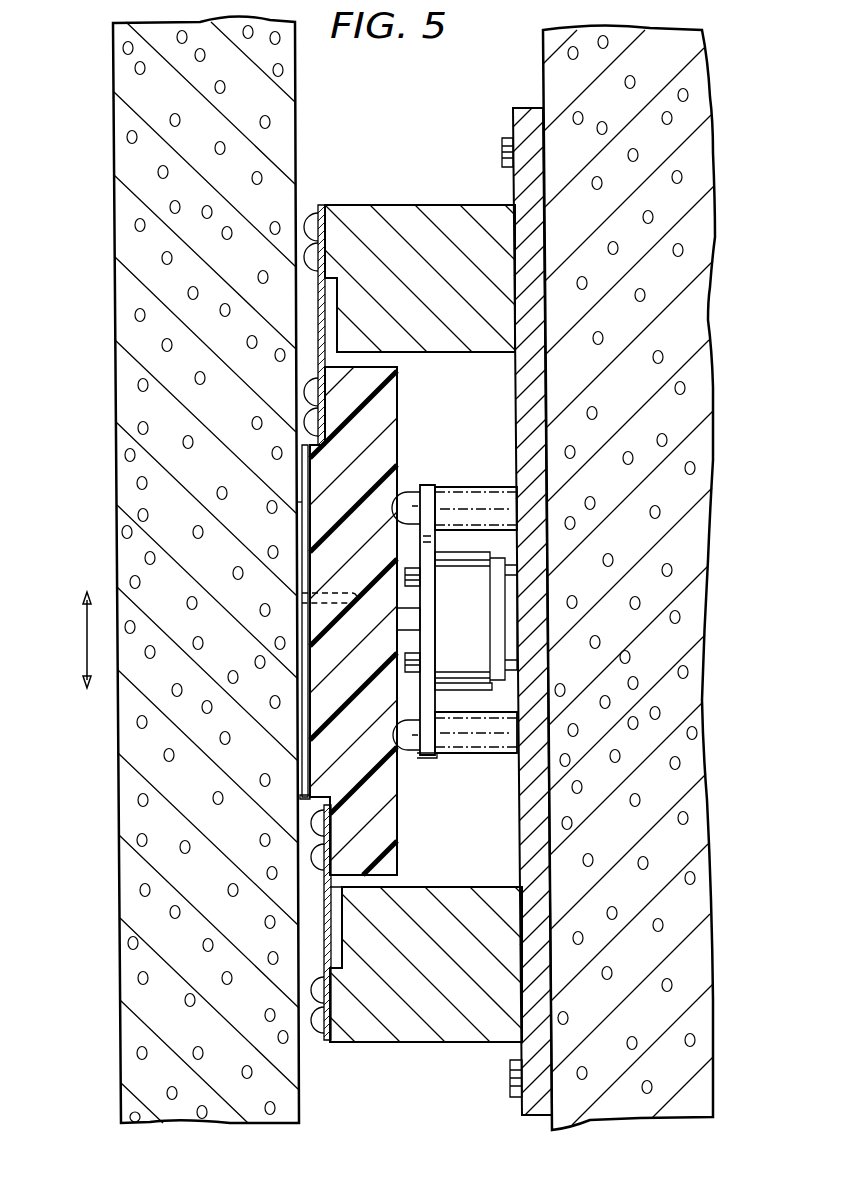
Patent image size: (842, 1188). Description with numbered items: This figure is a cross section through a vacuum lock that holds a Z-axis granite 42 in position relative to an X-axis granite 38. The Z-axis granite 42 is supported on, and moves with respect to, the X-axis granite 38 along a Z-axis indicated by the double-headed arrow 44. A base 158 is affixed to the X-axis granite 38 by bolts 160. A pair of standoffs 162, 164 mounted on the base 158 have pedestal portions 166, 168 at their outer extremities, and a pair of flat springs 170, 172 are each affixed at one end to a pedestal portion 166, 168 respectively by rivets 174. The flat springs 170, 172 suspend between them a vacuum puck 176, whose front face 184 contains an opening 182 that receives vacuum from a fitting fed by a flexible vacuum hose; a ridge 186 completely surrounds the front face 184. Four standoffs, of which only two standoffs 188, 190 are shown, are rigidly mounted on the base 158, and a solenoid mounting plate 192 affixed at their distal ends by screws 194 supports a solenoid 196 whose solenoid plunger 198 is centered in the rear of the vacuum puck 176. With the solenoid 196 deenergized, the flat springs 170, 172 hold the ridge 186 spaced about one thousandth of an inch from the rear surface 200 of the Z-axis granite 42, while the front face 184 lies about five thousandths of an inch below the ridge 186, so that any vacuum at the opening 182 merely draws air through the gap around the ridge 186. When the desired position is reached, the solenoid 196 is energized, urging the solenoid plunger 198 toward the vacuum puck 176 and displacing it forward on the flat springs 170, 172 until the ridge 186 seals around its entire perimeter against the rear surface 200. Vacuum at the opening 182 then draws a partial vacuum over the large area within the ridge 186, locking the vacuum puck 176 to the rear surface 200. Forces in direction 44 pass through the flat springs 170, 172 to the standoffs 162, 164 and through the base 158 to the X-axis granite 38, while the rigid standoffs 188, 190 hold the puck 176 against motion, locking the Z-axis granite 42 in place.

The rear surface 200 is at (298, 80).
The X-axis granite 38 is at (545, 60).
The base 158 is at (520, 108).
The bolts 160 is at (503, 155).
The pedestal portion 166 is at (322, 205).
The standoff 162 is at (397, 212).
The rivets 174 is at (324, 238).
The flat spring 170 is at (325, 313).
The vacuum puck 176 is at (399, 377).
The solenoid mounting plate 192 is at (422, 486).
The standoff 190 is at (462, 490).
The solenoid 196 is at (478, 558).
The Z-axis granite 42 is at (118, 502).
The front face 184 is at (301, 530).
The opening 182 is at (301, 596).
The double-headed arrow 44 is at (87, 649).
The solenoid plunger 198 is at (423, 621).
The ridge 186 is at (301, 797).
The screws 194 is at (413, 756).
The standoff 188 is at (481, 742).
The flat spring 172 is at (334, 908).
The pedestal portion 168 is at (339, 1044).
The standoff 164 is at (433, 1044).